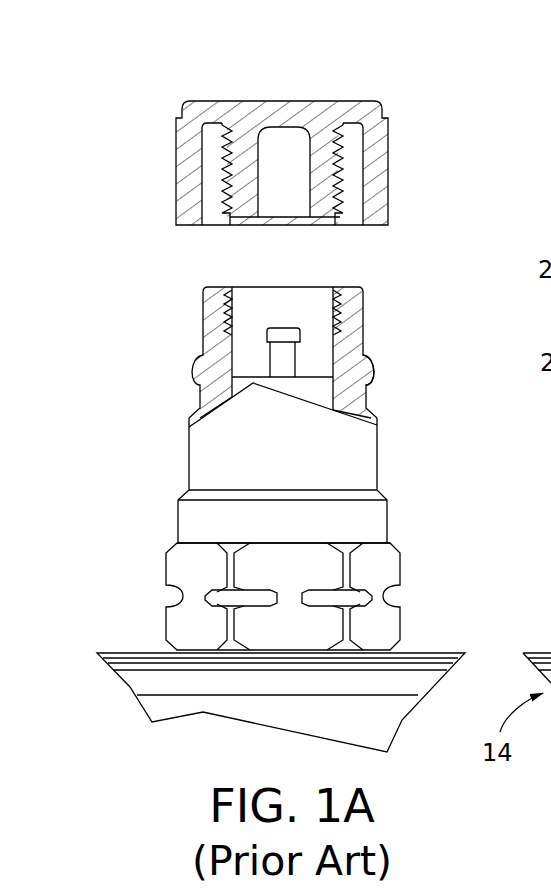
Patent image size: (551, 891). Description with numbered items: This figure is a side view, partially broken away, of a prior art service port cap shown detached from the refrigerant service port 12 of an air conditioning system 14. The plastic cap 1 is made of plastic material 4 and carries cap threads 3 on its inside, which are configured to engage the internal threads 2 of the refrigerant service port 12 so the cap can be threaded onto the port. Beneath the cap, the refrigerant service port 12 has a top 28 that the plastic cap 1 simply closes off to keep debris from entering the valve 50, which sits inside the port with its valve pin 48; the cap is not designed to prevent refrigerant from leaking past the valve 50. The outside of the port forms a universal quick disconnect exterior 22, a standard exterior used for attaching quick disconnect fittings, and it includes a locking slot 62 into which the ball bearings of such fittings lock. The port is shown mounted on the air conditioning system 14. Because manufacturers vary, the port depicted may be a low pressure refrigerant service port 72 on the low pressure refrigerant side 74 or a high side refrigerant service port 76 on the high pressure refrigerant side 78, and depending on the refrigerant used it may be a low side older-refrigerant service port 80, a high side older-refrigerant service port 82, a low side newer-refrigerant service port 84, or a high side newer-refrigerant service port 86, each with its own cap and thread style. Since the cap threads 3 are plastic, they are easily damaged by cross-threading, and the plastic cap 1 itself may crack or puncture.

The plastic cap 1 is at (390, 80).
The internal threads 2 is at (240, 307).
The cap threads 3 is at (222, 188).
The plastic material 4 is at (378, 155).
The refrigerant service port 12 is at (100, 445).
The air conditioning system 14 is at (108, 697).
The universal quick disconnect exterior 22 is at (390, 395).
The top 28 is at (212, 284).
The valve pin 48 is at (273, 337).
The valve 50 is at (234, 378).
The locking slot 62 is at (182, 414).
The low pressure refrigerant service port 72 is at (427, 600).
The low pressure refrigerant side 74 is at (380, 730).
The high side refrigerant service port 76 is at (358, 582).
The high pressure refrigerant side 78 is at (291, 733).
The low side HFC-134a refrigerant service port 80 is at (358, 582).
The high side HFC-134a refrigerant service port 82 is at (358, 596).
The low side 1234yf refrigerant service port 84 is at (358, 596).
The high side 1234yf refrigerant service port 86 is at (283, 596).